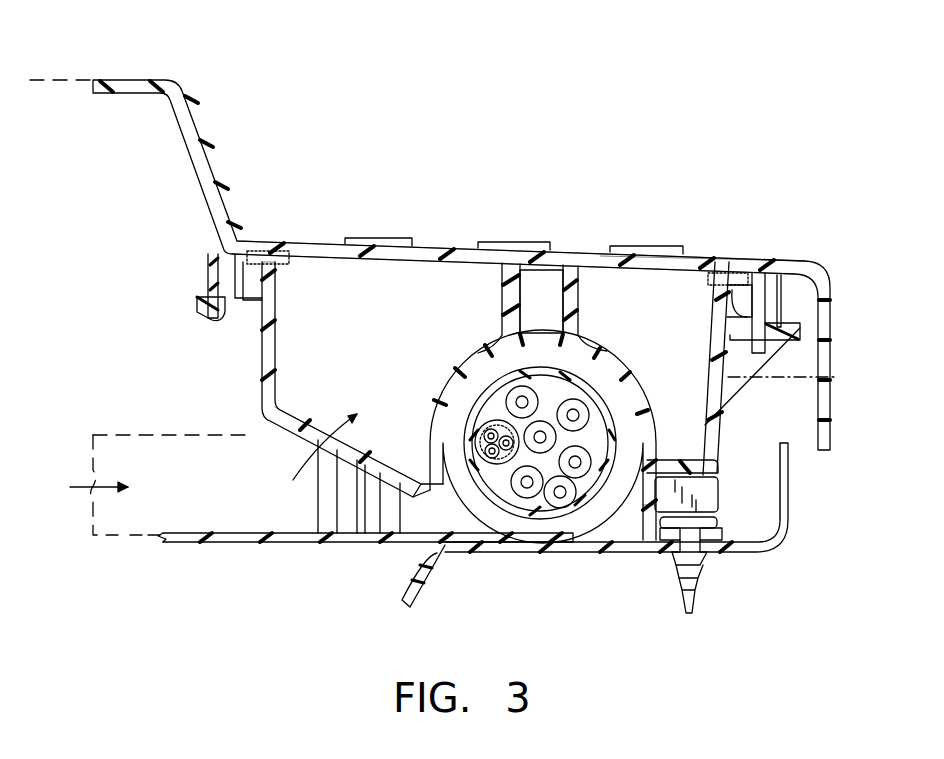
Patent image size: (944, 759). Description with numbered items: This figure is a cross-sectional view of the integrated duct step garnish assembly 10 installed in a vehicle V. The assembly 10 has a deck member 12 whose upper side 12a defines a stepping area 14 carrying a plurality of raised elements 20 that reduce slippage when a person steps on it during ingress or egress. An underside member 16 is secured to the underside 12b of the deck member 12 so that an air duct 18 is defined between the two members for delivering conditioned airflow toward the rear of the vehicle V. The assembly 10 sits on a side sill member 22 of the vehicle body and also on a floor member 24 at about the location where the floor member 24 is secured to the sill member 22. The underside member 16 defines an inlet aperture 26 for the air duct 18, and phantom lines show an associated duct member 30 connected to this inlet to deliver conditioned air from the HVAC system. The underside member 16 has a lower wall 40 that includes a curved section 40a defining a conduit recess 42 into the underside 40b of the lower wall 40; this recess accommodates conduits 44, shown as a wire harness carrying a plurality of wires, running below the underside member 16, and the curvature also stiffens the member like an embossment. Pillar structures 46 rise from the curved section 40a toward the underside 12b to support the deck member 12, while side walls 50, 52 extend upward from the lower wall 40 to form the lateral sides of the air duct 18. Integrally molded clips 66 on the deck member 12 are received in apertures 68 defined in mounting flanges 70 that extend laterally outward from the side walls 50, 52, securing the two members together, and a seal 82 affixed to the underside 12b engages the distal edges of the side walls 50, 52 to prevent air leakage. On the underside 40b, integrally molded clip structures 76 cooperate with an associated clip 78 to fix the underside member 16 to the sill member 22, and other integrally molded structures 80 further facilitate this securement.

The integrated duct step garnish assembly 10 is at (330, 142).
The deck member 12 is at (803, 259).
The upper side 12a is at (425, 246).
The underside 12b is at (413, 266).
The stepping area 14 is at (699, 246).
The underside member 16 is at (260, 364).
The air duct 18 is at (416, 332).
The raised elements 20 is at (390, 238).
The side sill member 22 is at (610, 555).
The floor member 24 is at (276, 546).
The inlet aperture 26 is at (277, 438).
The associated duct member 30 is at (118, 540).
The lower wall 40 is at (677, 460).
The curved section 40a is at (620, 372).
The underside 40b is at (680, 462).
The conduit recess 42 is at (453, 457).
The conduits 44 is at (582, 467).
The pillar structures 46 is at (580, 282).
The side wall 50 is at (275, 317).
The side wall 52 is at (800, 373).
The integrally molded clips 66 is at (220, 276).
The apertures 68 is at (217, 310).
The mounting flanges 70 is at (210, 300).
The integrally molded clip structures 76 is at (646, 508).
The associated clips 78 is at (697, 577).
The integrally molded structures 80 is at (345, 497).
The seal 82 is at (282, 252).
The vehicle V is at (776, 550).